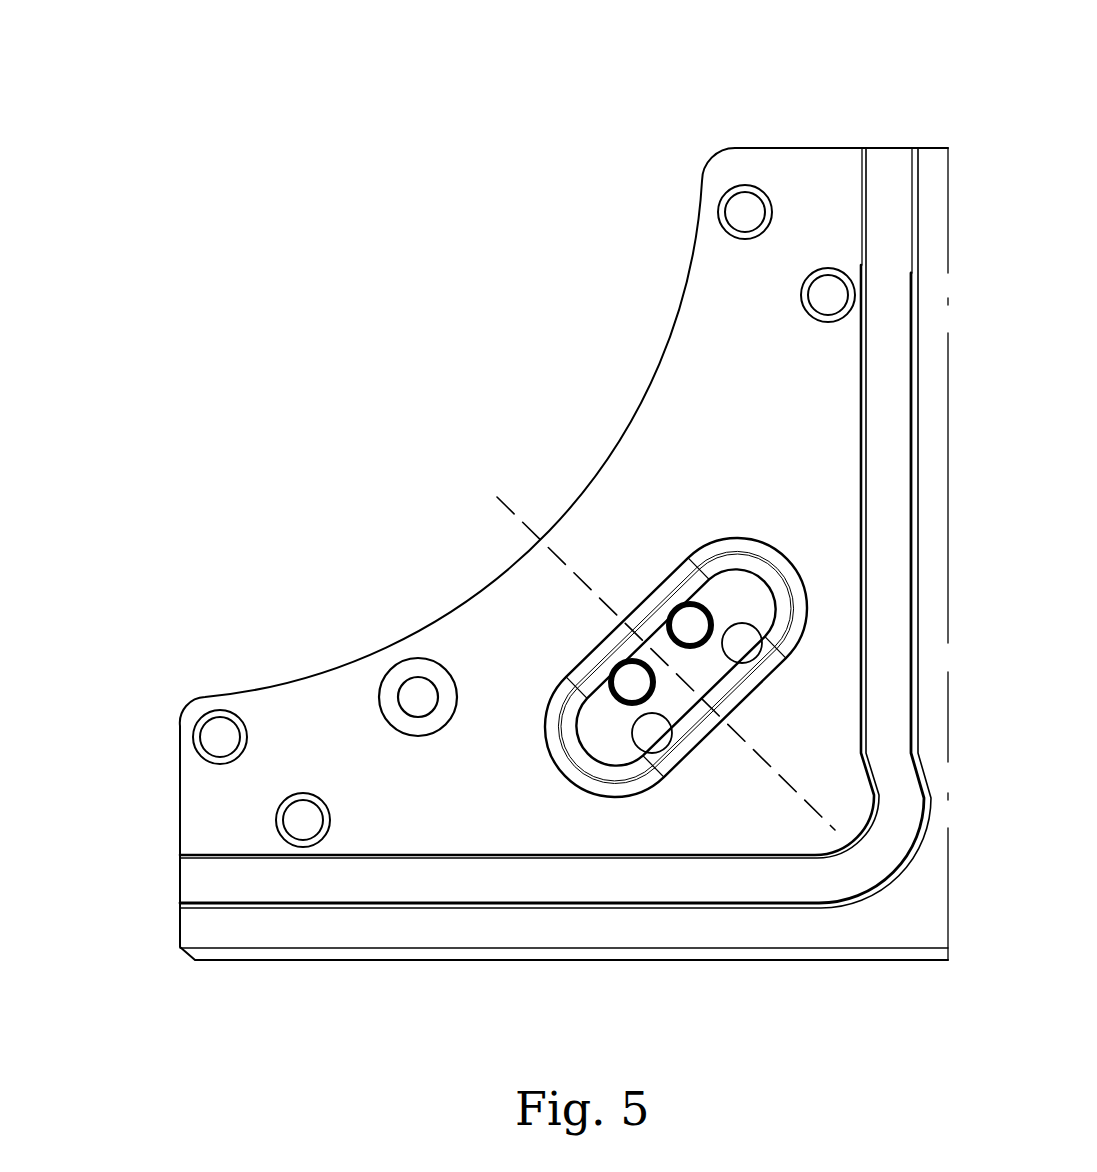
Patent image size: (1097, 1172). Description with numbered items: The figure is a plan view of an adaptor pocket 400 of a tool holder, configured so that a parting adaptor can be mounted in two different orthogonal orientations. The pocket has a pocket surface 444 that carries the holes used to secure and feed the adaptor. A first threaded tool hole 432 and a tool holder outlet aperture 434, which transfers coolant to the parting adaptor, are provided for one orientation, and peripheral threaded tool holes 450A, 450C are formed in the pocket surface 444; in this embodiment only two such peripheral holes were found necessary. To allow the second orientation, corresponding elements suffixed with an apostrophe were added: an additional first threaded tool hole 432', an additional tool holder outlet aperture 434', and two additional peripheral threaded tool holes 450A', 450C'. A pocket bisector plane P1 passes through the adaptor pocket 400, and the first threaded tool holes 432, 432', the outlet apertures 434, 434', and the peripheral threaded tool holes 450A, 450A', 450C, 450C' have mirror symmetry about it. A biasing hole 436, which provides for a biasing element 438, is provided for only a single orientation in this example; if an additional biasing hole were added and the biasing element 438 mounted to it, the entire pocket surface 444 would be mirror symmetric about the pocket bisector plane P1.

The adaptor pocket 400 is at (500, 416).
The pocket surface 444 is at (815, 398).
The peripheral threaded tool hole 450C is at (787, 134).
The additional peripheral threaded tool hole 450C' is at (884, 193).
The peripheral threaded tool hole 450A is at (187, 820).
The additional peripheral threaded tool hole 450A' is at (145, 716).
The biasing hole 436 is at (384, 678).
The biasing element 438 is at (418, 693).
The first threaded tool hole 432 is at (663, 842).
The additional first threaded tool hole 432' is at (638, 520).
The tool holder outlet aperture 434 is at (705, 858).
The additional tool holder outlet aperture 434' is at (647, 495).
The pocket bisector plane P1 is at (650, 651).